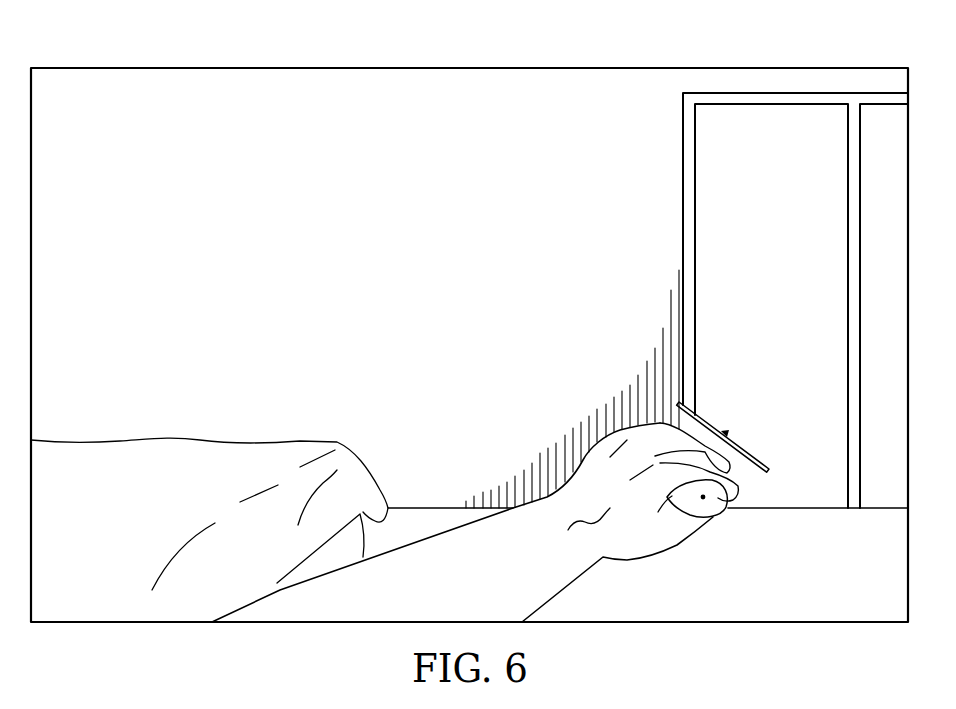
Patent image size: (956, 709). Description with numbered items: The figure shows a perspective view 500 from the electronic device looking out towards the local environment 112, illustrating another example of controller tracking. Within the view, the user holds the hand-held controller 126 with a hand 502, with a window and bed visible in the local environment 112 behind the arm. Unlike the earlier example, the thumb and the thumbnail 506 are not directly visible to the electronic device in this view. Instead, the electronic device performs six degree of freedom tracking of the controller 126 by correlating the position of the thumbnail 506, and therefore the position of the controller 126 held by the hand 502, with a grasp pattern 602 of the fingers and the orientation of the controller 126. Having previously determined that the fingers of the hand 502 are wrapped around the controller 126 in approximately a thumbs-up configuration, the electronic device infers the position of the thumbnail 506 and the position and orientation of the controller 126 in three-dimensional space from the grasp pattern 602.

The perspective view 500 is at (316, 64).
The local environment 112 is at (240, 216).
The hand-held controller 126 is at (728, 508).
The hand 502 is at (685, 554).
The thumbnail 506 is at (705, 499).
The grasp pattern 602 is at (723, 435).